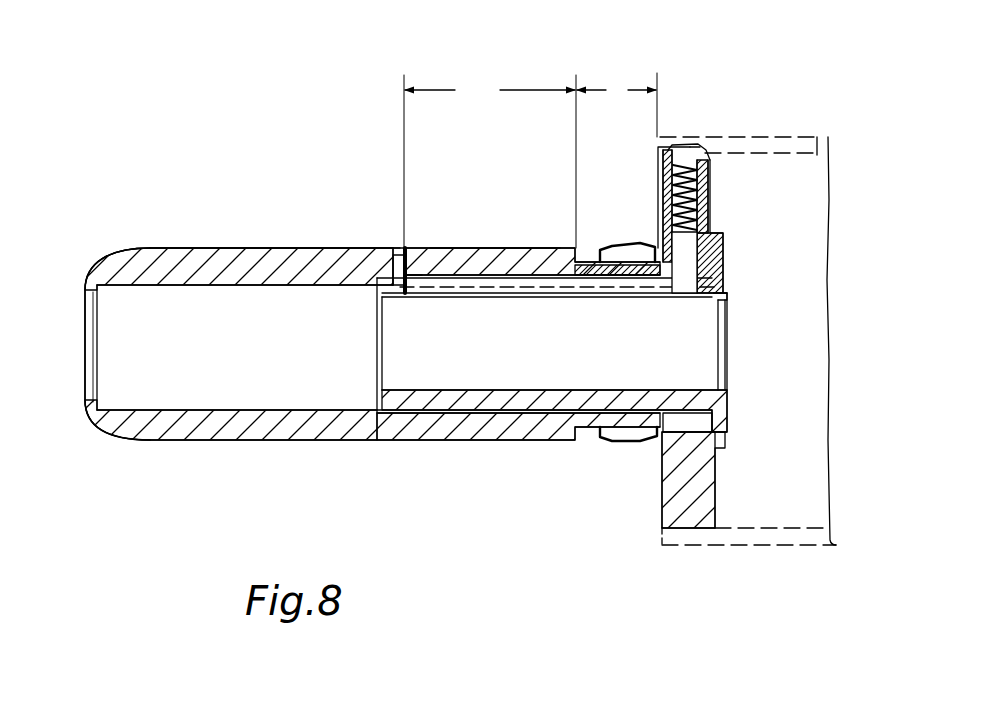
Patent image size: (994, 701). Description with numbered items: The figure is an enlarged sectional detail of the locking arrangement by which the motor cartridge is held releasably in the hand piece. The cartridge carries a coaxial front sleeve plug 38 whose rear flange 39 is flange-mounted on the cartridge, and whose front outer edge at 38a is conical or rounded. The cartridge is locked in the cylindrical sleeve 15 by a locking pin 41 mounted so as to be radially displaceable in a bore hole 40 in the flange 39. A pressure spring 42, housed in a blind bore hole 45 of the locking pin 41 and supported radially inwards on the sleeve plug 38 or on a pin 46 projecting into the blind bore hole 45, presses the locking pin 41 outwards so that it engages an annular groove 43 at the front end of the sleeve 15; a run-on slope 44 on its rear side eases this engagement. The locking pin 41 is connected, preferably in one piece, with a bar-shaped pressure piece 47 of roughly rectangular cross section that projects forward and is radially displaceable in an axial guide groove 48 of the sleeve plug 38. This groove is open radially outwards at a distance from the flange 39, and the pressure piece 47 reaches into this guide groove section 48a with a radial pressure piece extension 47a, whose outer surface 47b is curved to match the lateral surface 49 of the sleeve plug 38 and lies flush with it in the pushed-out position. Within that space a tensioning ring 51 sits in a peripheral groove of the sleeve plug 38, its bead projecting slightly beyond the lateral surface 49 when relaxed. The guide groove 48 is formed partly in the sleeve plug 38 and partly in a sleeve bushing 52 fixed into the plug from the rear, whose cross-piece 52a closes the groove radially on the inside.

The sleeve 15 is at (763, 533).
The sleeve plug 38 is at (237, 265).
The front outer edge of the sleeve plug 38a is at (113, 252).
The rear flange 39 is at (670, 512).
The bore hole 40 is at (658, 190).
The locking pin 41 is at (708, 217).
The spring 42 is at (744, 163).
The annular groove 43 is at (692, 145).
The run-on slope 44 is at (702, 158).
The blind bore hole 45 is at (744, 163).
The pin 46 is at (727, 294).
The pressure piece 47 is at (422, 278).
The pressure piece extension 47a is at (418, 270).
The outer surface 47b is at (462, 246).
The guide groove 48 is at (394, 252).
The guide groove section 48a is at (530, 160).
The lateral surface 49 is at (192, 250).
The tensioning ring 51 is at (613, 441).
The sleeve bushing 52 is at (674, 402).
The cross-piece 52a is at (550, 292).